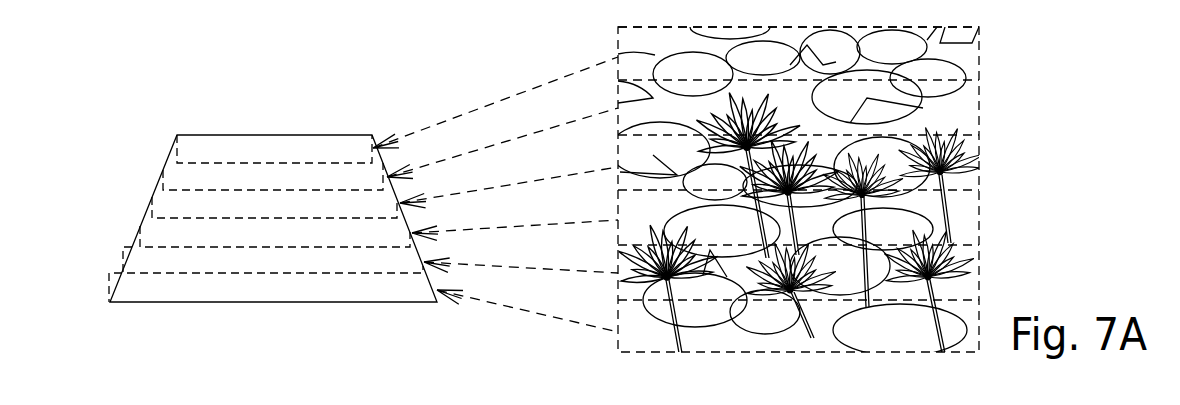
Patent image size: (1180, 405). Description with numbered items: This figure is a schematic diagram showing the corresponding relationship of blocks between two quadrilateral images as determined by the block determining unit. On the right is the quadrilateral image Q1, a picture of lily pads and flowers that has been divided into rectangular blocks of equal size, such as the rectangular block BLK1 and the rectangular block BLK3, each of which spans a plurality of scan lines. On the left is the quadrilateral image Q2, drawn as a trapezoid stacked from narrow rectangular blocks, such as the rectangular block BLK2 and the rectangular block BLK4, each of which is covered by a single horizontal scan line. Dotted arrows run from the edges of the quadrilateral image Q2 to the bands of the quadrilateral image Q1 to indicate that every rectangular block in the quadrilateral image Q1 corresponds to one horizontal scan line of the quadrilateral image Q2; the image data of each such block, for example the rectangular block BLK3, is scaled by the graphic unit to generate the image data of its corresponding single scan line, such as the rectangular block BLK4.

The quadrilateral image Q2 is at (338, 110).
The quadrilateral image Q1 is at (1017, 232).
The rectangular block BLK1 is at (979, 50).
The rectangular block BLK2 is at (177, 143).
The rectangular block BLK3 is at (979, 110).
The rectangular block BLK4 is at (163, 173).